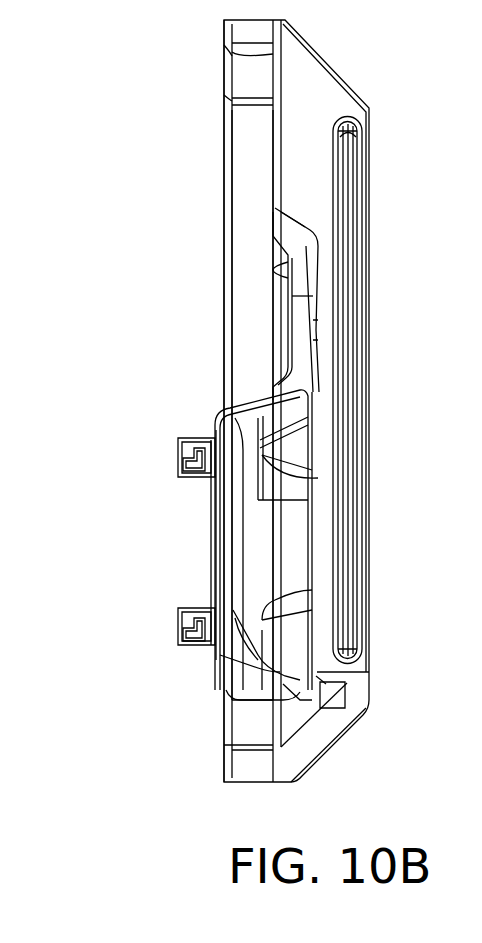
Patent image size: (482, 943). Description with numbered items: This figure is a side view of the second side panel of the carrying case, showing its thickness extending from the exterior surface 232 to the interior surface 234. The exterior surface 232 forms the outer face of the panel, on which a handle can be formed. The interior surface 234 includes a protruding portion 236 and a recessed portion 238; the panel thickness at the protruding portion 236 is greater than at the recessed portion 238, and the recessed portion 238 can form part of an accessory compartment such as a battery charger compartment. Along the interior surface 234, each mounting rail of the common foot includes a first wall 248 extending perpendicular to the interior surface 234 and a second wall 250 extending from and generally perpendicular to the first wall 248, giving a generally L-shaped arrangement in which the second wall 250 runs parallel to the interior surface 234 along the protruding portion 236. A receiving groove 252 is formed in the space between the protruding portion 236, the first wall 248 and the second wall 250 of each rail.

The exterior surface 232 is at (373, 190).
The interior surface 234 is at (240, 296).
The protruding portion 236 is at (284, 556).
The recessed portion 238 is at (268, 212).
The first wall 248 is at (200, 448).
The second wall 250 is at (180, 474).
The receiving groove 252 is at (210, 484).